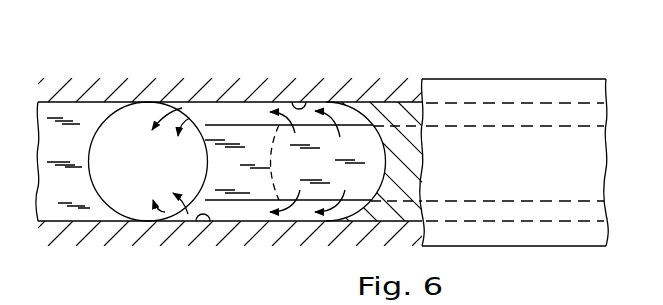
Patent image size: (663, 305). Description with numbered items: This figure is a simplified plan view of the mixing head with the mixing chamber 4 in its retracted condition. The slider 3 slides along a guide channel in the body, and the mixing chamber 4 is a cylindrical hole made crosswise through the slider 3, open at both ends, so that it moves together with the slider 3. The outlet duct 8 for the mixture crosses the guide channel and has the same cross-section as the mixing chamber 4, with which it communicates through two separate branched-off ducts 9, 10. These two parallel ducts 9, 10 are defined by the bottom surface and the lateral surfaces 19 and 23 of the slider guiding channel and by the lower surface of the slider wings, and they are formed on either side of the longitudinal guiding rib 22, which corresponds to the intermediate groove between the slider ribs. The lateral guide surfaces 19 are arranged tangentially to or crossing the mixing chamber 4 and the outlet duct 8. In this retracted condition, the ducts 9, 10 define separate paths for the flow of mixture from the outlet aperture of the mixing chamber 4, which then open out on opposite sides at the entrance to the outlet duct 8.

The slider 3 is at (547, 97).
The mixing chamber 4 is at (330, 180).
The outlet duct 8 is at (133, 172).
The branched-off duct 9 is at (232, 117).
The branched-off duct 10 is at (246, 222).
The lateral guide surface 19 is at (298, 98).
The longitudinal guiding rib 22 is at (217, 153).
The lateral surface 23 is at (250, 123).